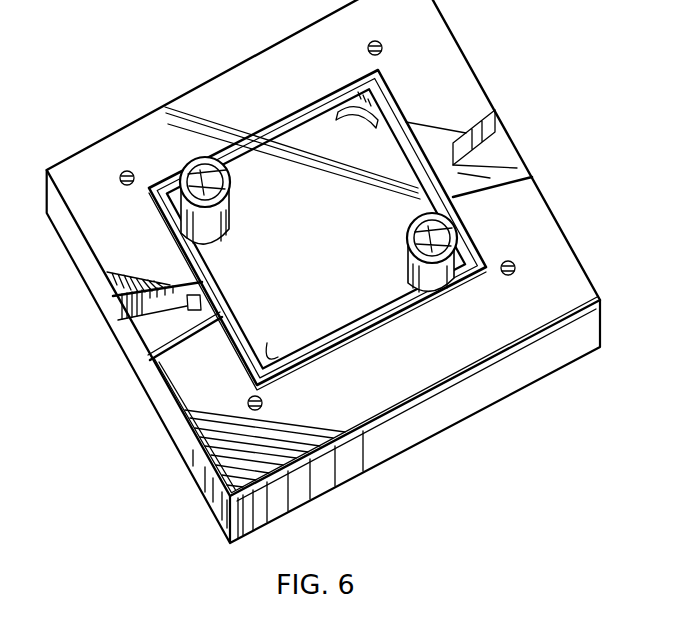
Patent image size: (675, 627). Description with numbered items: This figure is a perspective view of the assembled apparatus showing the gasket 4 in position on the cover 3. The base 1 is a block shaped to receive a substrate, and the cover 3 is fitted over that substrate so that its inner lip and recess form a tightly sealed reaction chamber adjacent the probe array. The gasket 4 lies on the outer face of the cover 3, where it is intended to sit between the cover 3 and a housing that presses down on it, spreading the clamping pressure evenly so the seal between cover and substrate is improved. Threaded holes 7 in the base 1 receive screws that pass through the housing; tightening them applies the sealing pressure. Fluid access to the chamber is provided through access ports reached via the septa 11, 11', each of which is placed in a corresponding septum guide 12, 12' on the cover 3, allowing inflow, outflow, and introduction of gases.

The base 1 is at (372, 447).
The cover 3 is at (248, 277).
The gasket 4 is at (498, 140).
The threaded holes 7 is at (250, 402).
The septum 11 is at (518, 231).
The septum 11' is at (139, 136).
The septum guide 12 is at (514, 327).
The septum guide 12' is at (189, 134).